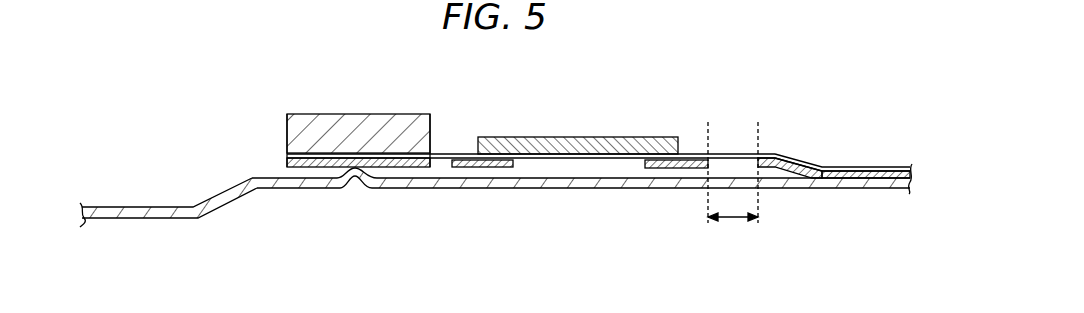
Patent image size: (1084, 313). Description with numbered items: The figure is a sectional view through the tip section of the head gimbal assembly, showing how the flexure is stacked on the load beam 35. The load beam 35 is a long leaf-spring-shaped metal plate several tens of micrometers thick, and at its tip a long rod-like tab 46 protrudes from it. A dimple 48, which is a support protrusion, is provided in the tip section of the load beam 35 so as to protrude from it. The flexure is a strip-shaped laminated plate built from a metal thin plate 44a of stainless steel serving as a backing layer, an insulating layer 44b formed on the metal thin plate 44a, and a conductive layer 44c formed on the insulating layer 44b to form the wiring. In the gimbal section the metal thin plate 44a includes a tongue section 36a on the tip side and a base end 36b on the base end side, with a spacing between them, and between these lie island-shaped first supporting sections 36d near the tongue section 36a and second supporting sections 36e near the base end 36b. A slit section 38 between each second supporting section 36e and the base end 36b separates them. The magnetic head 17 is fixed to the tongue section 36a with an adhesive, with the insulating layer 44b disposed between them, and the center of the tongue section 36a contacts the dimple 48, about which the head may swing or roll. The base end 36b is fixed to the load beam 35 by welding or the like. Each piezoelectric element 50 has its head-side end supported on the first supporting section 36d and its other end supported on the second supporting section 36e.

The magnetic head 17 is at (363, 126).
The load beam 35 is at (551, 191).
The tongue section 36a is at (403, 167).
The base end 36b is at (800, 172).
The first supporting section 36d is at (480, 167).
The second supporting section 36e is at (680, 168).
The slit section 38 is at (733, 220).
The metal thin plate 44a is at (853, 179).
The insulating layer 44b is at (607, 158).
The conductive layer 44c is at (797, 154).
The tab 46 is at (152, 218).
The dimple 48 is at (358, 175).
The piezoelectric element 50 is at (568, 138).